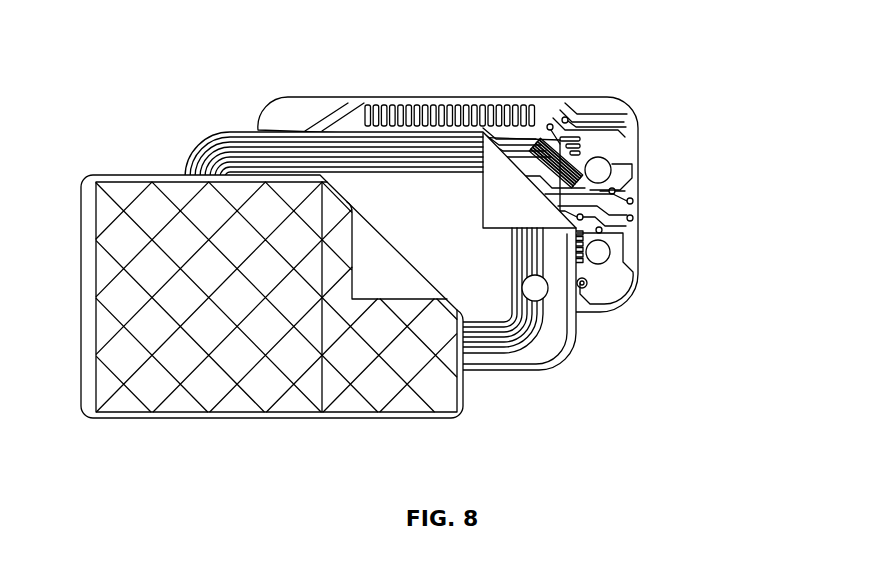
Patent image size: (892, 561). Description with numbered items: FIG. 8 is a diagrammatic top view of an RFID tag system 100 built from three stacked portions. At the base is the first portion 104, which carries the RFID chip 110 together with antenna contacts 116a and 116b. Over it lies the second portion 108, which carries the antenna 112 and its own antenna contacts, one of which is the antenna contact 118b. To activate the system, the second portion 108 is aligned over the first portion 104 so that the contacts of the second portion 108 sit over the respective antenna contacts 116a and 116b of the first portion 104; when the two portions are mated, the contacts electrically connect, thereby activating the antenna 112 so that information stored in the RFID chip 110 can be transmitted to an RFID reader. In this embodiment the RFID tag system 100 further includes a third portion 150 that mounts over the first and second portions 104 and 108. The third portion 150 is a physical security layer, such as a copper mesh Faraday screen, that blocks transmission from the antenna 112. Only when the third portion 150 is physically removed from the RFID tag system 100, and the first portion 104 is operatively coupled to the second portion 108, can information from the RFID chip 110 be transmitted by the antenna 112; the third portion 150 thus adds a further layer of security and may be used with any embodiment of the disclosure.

The RFID tag system 100 is at (664, 68).
The first portion 104 is at (603, 96).
The second portion 108 is at (428, 212).
The RFID chip 110 is at (627, 178).
The antenna 112 is at (258, 148).
The antenna contact 116a is at (605, 168).
The antenna contact 116b is at (603, 253).
The antenna contact 118b is at (535, 296).
The third portion 150 is at (206, 397).